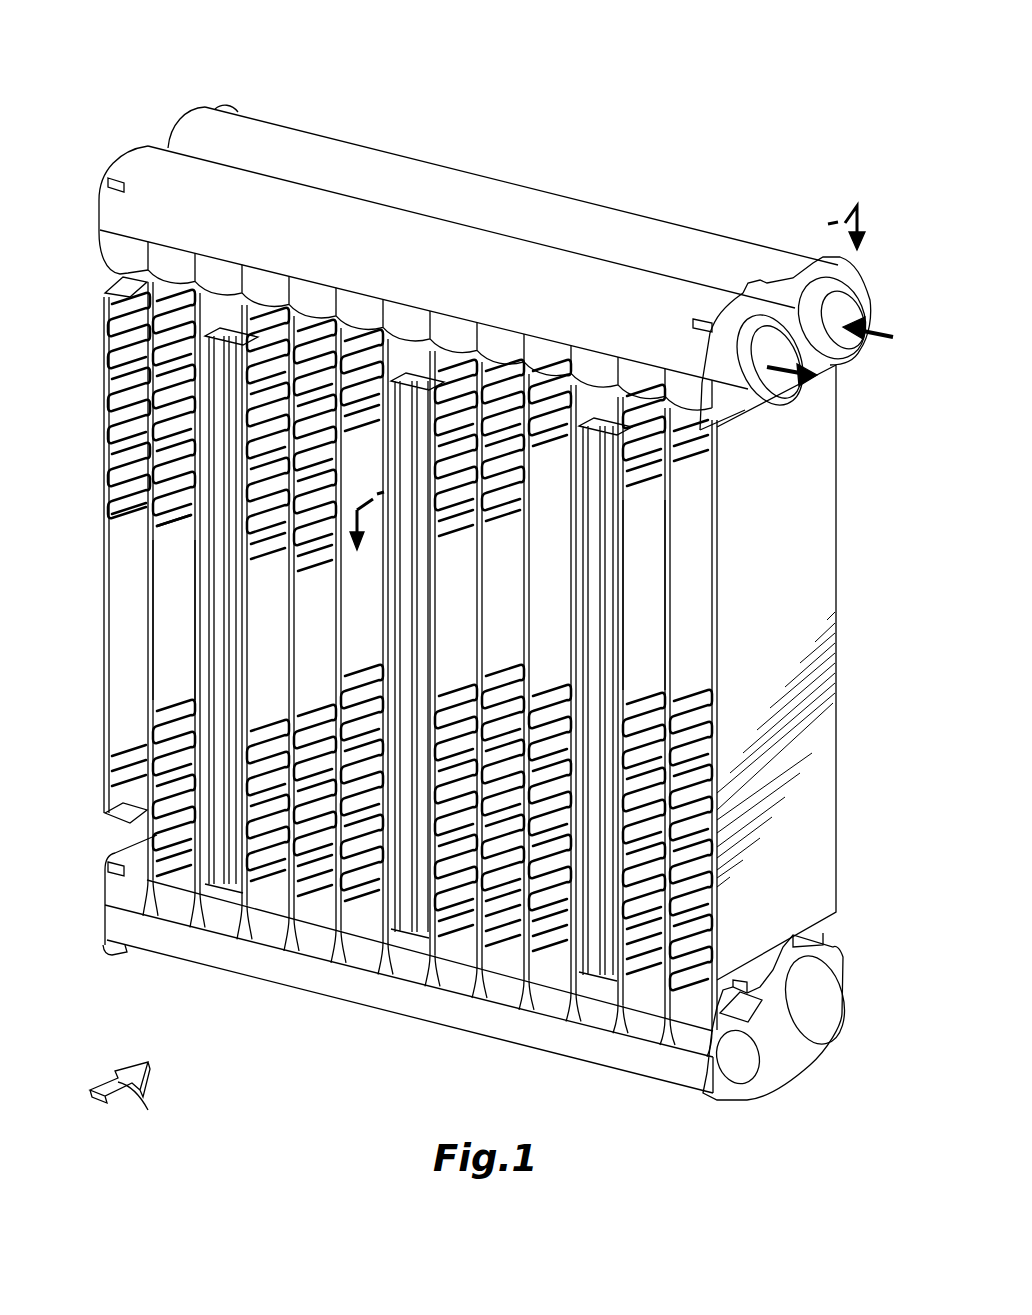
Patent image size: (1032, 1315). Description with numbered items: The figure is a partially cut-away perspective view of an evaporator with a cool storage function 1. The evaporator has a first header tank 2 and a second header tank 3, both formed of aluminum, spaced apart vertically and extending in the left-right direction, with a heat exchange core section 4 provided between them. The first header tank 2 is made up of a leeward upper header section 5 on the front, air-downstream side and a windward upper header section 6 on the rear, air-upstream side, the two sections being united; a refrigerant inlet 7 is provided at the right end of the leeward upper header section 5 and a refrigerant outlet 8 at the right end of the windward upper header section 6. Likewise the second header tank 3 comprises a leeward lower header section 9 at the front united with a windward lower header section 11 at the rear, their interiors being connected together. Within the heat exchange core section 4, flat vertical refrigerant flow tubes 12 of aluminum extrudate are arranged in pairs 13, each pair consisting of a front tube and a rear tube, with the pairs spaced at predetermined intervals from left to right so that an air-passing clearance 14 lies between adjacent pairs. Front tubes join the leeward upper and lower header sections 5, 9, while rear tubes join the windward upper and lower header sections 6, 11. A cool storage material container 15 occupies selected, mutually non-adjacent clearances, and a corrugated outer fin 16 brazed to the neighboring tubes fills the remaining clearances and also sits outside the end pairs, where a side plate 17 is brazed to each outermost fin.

The evaporator with a cool storage function 1 is at (330, 104).
The first header tank 2 is at (496, 270).
The second header tank 3 is at (496, 1002).
The heat exchange core section 4 is at (469, 653).
The leeward upper header section 5 is at (403, 185).
The windward upper header section 6 is at (530, 263).
The refrigerant inlet 7 is at (835, 342).
The refrigerant outlet 8 is at (770, 403).
The leeward lower header section 9 is at (800, 937).
The windward lower header section 11 is at (668, 1075).
The refrigerant flow tube 12 is at (150, 698).
The pair of refrigerant flow tubes 13 is at (150, 738).
The air-passing clearance 14 is at (165, 650).
The cool storage material container 15 is at (185, 905).
The corrugated outer fin 16 is at (185, 538).
The side plate 17 is at (105, 470).